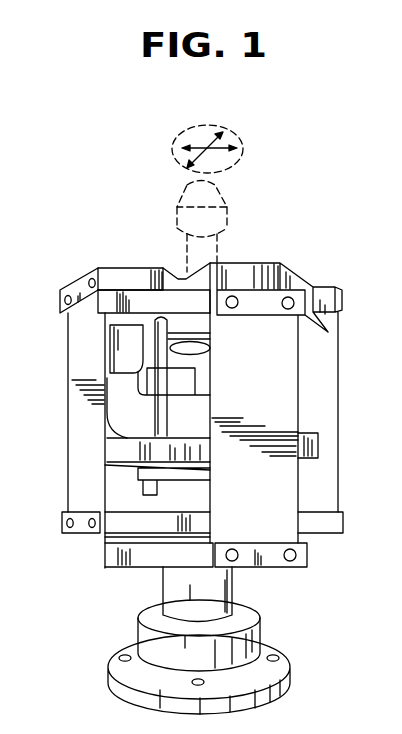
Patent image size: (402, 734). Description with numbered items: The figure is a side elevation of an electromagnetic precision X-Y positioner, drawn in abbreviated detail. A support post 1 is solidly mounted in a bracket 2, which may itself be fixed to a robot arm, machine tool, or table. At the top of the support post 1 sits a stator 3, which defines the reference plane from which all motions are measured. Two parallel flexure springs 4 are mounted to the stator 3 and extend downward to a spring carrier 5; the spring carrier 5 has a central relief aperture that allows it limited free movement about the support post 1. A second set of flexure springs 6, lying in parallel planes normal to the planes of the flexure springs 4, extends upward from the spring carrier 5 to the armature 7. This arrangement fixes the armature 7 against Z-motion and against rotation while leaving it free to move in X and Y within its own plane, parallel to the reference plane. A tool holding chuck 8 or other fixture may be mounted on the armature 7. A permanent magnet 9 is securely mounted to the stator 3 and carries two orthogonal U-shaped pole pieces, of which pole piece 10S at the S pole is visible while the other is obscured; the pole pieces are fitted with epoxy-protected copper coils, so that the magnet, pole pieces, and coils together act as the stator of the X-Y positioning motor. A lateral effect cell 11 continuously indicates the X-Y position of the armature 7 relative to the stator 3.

The support post 1 is at (170, 580).
The bracket 2 is at (117, 677).
The stator 3 is at (147, 302).
The flexure springs 4 is at (287, 383).
The spring carrier 5 is at (277, 568).
The flexure springs 6 is at (77, 323).
The armature 7 is at (112, 268).
The tool holding chuck 8 is at (225, 207).
The permanent magnet 9 is at (127, 410).
The U-shaped pole piece 10S is at (125, 352).
The lateral effect cell 11 is at (192, 338).
The S pole S is at (125, 389).